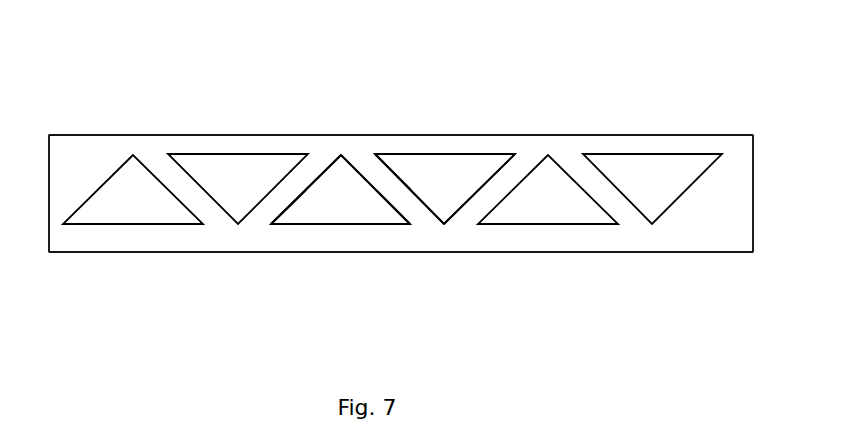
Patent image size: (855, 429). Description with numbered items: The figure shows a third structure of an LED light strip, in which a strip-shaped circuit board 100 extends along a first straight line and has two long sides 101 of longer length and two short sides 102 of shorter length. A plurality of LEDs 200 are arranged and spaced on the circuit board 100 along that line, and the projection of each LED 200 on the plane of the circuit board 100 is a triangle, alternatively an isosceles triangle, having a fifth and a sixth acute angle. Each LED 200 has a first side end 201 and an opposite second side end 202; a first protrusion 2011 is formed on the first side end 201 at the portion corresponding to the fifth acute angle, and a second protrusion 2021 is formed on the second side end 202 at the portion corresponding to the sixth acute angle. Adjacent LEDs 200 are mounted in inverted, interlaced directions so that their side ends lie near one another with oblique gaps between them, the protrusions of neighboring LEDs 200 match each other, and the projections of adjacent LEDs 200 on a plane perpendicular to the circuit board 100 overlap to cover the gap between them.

The circuit board 100 is at (626, 143).
The long side 101 is at (245, 137).
The short side 102 is at (49, 187).
The LED 200 is at (357, 177).
The first side end 201 is at (313, 188).
The first protrusion 2011 is at (498, 159).
The second side end 202 is at (377, 190).
The second protrusion 2021 is at (398, 165).